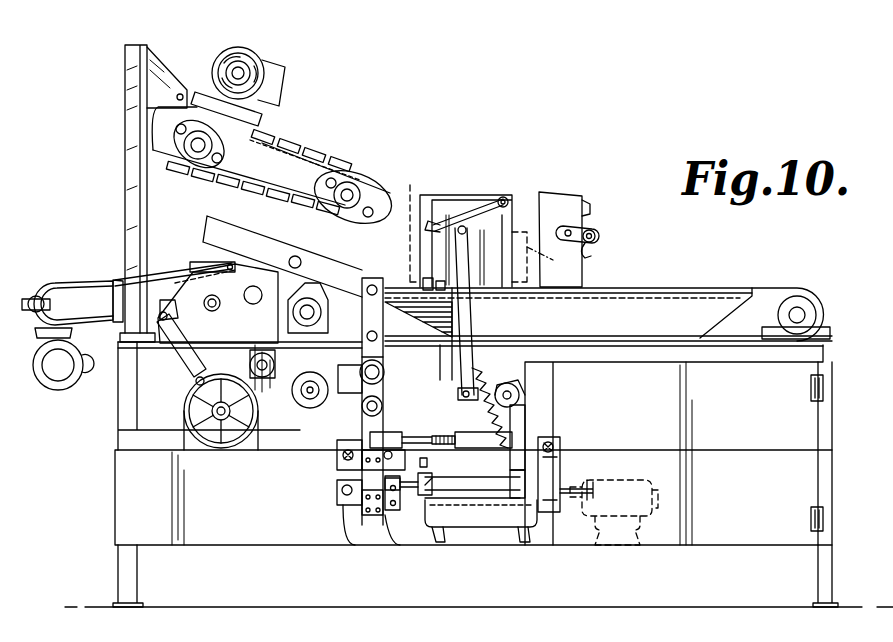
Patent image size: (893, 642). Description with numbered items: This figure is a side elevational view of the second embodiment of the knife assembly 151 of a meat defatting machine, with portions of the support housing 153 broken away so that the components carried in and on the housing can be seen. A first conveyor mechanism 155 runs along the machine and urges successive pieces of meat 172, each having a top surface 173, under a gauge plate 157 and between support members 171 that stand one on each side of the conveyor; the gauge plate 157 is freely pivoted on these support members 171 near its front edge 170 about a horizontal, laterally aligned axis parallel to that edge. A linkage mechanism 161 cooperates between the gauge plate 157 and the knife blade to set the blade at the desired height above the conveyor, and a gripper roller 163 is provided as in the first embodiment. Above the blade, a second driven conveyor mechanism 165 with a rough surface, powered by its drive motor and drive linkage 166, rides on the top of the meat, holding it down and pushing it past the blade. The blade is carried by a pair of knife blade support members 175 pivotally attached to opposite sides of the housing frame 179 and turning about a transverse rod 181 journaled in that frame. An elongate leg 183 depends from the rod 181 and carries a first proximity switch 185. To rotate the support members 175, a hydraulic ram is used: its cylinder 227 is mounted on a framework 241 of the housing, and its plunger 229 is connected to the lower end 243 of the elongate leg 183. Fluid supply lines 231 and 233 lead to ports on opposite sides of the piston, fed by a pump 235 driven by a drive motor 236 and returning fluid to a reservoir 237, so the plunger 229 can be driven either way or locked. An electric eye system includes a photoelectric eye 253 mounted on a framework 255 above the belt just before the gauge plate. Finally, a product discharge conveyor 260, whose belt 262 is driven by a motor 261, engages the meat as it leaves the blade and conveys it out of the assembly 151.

The knife assembly 151 is at (397, 162).
The support housing 153 is at (834, 375).
The first conveyor mechanism 155 is at (575, 296).
The gauge plate 157 is at (458, 228).
The linkage mechanism 161 is at (438, 430).
The gripper roller 163 is at (328, 270).
The second driven conveyor mechanism 165 is at (291, 133).
The drive motor and drive linkage 166 is at (250, 44).
The front edge 170 is at (502, 195).
The support members 171 is at (510, 228).
The pieces of meat 172 is at (554, 263).
The top surface 173 is at (409, 184).
The knife blade support members 175 is at (214, 222).
The housing frame 179 is at (160, 355).
The rod 181 is at (385, 372).
The elongate leg 183 is at (362, 397).
The first proximity switch 185 is at (340, 457).
The cylinder 227 is at (497, 482).
The plunger 229 is at (418, 498).
The fluid supply line 231 is at (448, 452).
The fluid supply line 233 is at (513, 453).
The pump 235 is at (430, 492).
The drive motor 236 is at (607, 458).
The fluid reservoir 237 is at (512, 491).
The framework 241 is at (527, 455).
The lower end 243 is at (404, 503).
The photo electric eye 253 is at (588, 238).
The framework 255 is at (582, 210).
The product discharge conveyor 260 is at (52, 293).
The motor 261 is at (70, 392).
The belt 262 is at (118, 270).